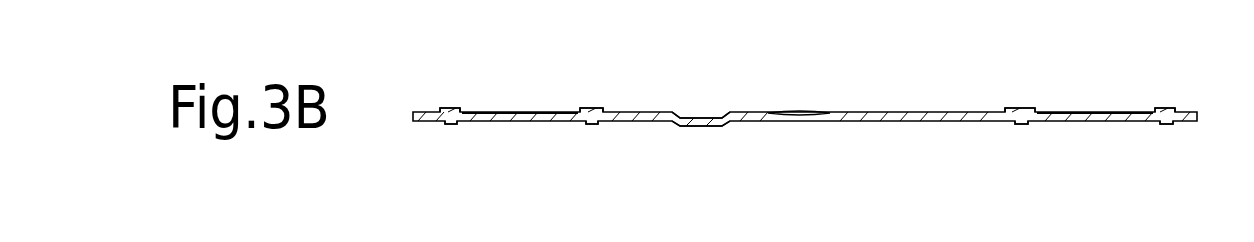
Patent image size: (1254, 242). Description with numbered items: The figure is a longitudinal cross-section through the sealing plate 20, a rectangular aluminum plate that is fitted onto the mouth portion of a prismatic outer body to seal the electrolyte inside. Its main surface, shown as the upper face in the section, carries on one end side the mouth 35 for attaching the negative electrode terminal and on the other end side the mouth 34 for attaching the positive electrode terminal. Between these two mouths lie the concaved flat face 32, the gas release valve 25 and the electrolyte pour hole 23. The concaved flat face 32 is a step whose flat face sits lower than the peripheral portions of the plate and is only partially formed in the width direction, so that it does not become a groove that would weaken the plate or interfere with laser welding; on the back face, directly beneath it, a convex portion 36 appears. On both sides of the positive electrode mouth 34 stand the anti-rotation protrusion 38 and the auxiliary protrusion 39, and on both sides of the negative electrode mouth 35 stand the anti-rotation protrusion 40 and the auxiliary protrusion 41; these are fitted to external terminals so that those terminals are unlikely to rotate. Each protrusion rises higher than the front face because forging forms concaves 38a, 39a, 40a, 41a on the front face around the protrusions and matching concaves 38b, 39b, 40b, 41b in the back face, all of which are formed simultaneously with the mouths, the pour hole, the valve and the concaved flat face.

The sealing plate 20 is at (870, 112).
The electrolyte pour hole 23 is at (918, 120).
The gas release valve 25 is at (783, 112).
The concaved flat face 32 is at (697, 113).
The mouth for attaching the positive electrode terminal 34 is at (1097, 120).
The mouth for attaching the negative electrode terminal 35 is at (508, 120).
The convex portion 36 is at (703, 125).
The anti-rotation protrusion 38 is at (1030, 108).
The concave 38a is at (993, 111).
The concave 38b is at (1025, 121).
The auxiliary protrusion 39 is at (1157, 110).
The concave 39a is at (1178, 111).
The concave 39b is at (1163, 121).
The anti-rotation protrusion 40 is at (577, 108).
The concave 40a is at (615, 110).
The concave 40b is at (593, 121).
The auxiliary protrusion 41 is at (447, 108).
The concave 41a is at (462, 110).
The concave 41b is at (449, 121).